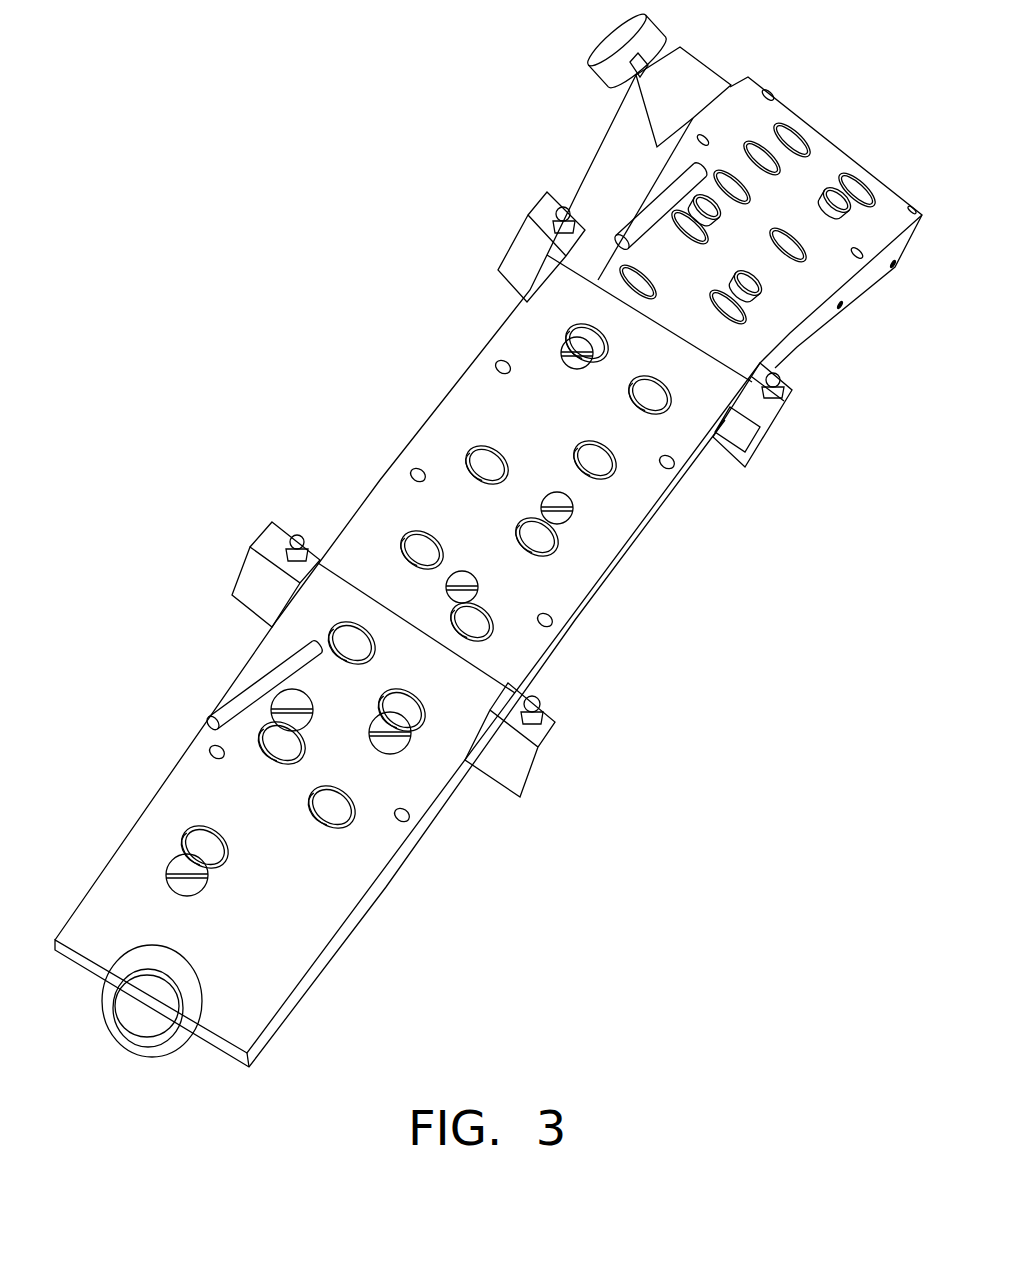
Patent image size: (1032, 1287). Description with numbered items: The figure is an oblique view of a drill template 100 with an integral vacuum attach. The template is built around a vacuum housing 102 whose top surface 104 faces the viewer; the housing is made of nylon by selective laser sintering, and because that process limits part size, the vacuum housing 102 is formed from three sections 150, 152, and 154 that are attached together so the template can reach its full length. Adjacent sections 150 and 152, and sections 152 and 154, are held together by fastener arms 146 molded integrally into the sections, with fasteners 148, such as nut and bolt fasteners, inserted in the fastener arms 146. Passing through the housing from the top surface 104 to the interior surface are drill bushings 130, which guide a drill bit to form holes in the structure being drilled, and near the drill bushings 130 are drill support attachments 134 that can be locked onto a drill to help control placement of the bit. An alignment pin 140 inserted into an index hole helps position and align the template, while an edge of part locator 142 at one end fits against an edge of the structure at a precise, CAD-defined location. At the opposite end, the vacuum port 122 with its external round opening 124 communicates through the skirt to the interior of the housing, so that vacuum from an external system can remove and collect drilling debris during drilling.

The drill template 100 is at (374, 198).
The vacuum housing 102 is at (455, 417).
The top surface 104 is at (527, 360).
The vacuum port 122 is at (163, 1055).
The round opening 124 is at (147, 1035).
The drill bushings 130 is at (508, 453).
The drill support attachments 134 is at (478, 588).
The alignment pin 140 is at (263, 690).
The edge of part locator 142 is at (688, 78).
The fastener arms 146 is at (742, 433).
The fasteners 148 is at (780, 377).
The section 150 is at (197, 787).
The section 152 is at (425, 447).
The section 154 is at (642, 195).